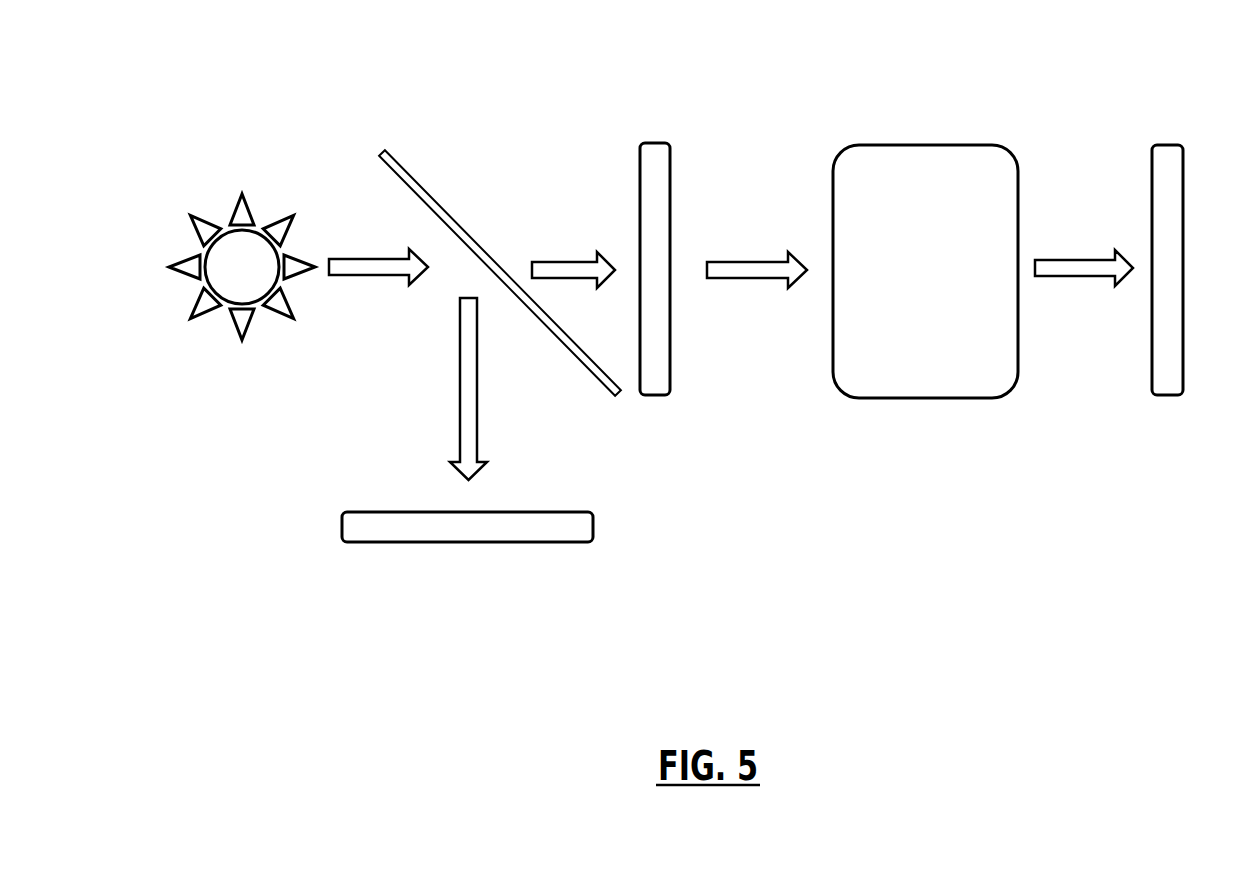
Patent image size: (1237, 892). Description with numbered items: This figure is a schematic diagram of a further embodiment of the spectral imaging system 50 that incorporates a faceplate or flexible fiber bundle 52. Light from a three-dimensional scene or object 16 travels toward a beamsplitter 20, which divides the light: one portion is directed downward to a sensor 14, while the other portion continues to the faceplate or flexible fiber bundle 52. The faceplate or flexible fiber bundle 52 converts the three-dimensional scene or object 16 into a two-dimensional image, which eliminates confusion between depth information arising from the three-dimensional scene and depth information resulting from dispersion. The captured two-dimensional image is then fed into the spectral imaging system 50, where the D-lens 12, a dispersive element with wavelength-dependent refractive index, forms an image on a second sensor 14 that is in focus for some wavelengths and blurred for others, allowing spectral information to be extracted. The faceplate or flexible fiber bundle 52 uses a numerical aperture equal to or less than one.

The object 16 is at (267, 193).
The beamsplitter 20 is at (510, 227).
The spectral imaging system 50 is at (770, 70).
The faceplate or flexible fiber bundle 52 is at (662, 130).
The D-lens 12 is at (957, 125).
The sensor 14 is at (1170, 112).